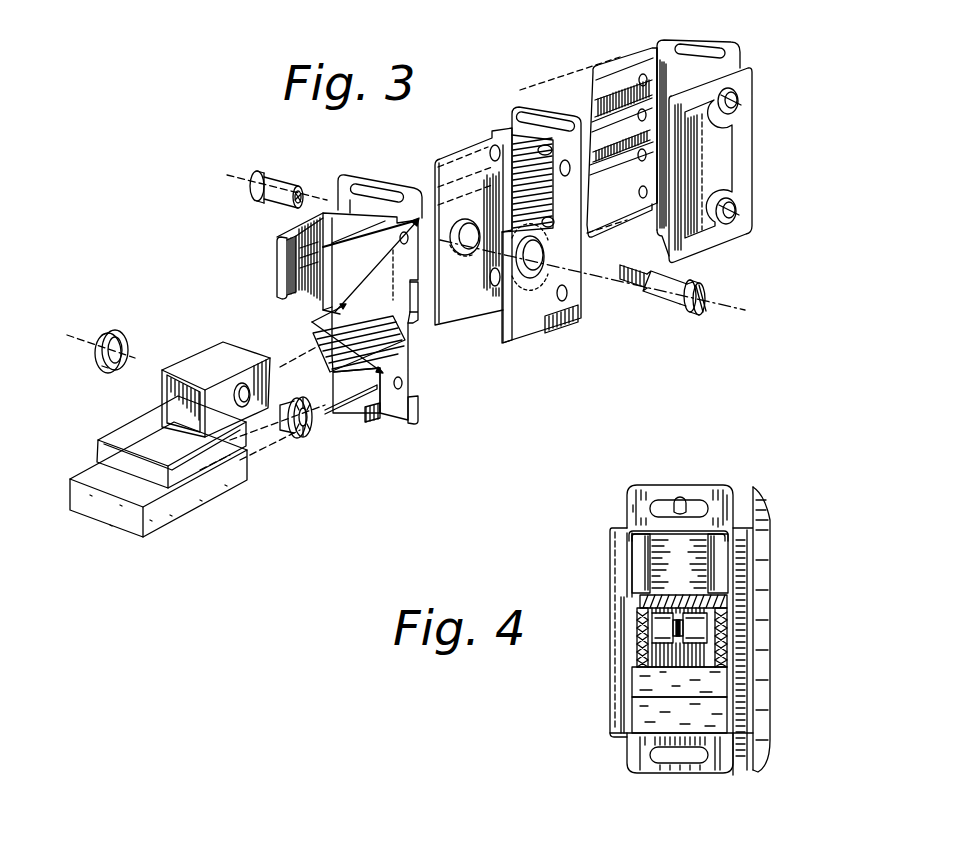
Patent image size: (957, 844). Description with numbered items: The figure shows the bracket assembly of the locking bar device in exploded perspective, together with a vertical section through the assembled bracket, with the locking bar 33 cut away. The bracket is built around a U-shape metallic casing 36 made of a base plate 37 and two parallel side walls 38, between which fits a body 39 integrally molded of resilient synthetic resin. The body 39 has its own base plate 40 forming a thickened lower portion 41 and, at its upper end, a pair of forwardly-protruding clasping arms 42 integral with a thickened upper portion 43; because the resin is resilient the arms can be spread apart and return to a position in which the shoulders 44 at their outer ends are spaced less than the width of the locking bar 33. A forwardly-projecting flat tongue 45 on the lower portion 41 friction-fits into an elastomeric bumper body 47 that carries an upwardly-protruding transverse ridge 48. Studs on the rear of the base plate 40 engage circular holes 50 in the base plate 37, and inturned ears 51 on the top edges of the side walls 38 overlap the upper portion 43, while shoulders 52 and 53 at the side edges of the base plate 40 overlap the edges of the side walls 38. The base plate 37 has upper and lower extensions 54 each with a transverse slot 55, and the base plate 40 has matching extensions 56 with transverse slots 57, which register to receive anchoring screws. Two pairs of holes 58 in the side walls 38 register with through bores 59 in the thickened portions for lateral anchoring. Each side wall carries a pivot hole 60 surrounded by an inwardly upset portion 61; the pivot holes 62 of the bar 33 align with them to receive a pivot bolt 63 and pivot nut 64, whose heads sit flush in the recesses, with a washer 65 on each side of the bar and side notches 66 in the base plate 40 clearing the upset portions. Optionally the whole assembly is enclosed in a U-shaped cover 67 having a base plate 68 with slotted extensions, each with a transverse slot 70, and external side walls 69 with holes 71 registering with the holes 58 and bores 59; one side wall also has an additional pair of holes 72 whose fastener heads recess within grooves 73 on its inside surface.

In FIG. 3, the locking bar 33 is at (232, 408).
In FIG. 4, the locking bar 33 is at (715, 665).
In FIG. 3, the U-shape metallic casing 36 is at (473, 217).
In FIG. 3, the base plate 37 is at (592, 212).
In FIG. 3, the side walls 38 is at (452, 173).
In FIG. 4, the side walls 38 is at (630, 700).
In FIG. 3, the body 39 is at (318, 182).
In FIG. 3, the base plate 40 is at (408, 398).
In FIG. 3, the thickened lower portion 41 is at (386, 404).
In FIG. 3, the clasping arms 42 is at (352, 257).
In FIG. 3, the thickened upper portion 43 is at (341, 293).
In FIG. 4, the shoulders 44 is at (640, 560).
In FIG. 3, the flat tongue 45 is at (330, 422).
In FIG. 3, the bumper body 47 is at (158, 466).
In FIG. 4, the bumper body 47 is at (648, 718).
In FIG. 3, the transverse ridge 48 is at (115, 440).
In FIG. 4, the transverse ridge 48 is at (645, 680).
In FIG. 3, the circular holes 50 is at (540, 238).
In FIG. 3, the inturned ears 51 is at (517, 104).
In FIG. 4, the inturned ears 51 is at (720, 530).
In FIG. 3, the shoulder 52 is at (413, 312).
In FIG. 3, the shoulder 53 is at (410, 422).
In FIG. 3, the extensions 54 is at (537, 118).
In FIG. 4, the extensions 54 is at (725, 487).
In FIG. 3, the transverse slot 55 is at (545, 145).
In FIG. 4, the transverse slot 55 is at (681, 500).
In FIG. 3, the extensions 56 is at (410, 186).
In FIG. 3, the transverse slot 57 is at (377, 192).
In FIG. 4, the transverse slot 57 is at (680, 505).
In FIG. 3, the holes 58 is at (566, 300).
In FIG. 3, the through bores 59 is at (349, 295).
In FIG. 3, the pivot hole 60 is at (470, 258).
In FIG. 3, the upset portion 61 is at (493, 286).
In FIG. 3, the pivot holes 62 is at (248, 402).
In FIG. 3, the pivot bolt 63 is at (680, 293).
In FIG. 4, the pivot bolt 63 is at (650, 632).
In FIG. 3, the pivot nut 64 is at (280, 184).
In FIG. 4, the pivot nut 64 is at (706, 633).
In FIG. 3, the washer 65 is at (112, 332).
In FIG. 3, the side notches 66 is at (385, 308).
In FIG. 3, the U-shaped cover 67 is at (730, 138).
In FIG. 3, the base plate 68 is at (736, 60).
In FIG. 3, the external side walls 69 is at (707, 238).
In FIG. 3, the transverse slot 70 is at (704, 48).
In FIG. 3, the holes 71 is at (644, 76).
In FIG. 3, the additional pair of holes 72 is at (665, 115).
In FIG. 3, the grooves 73 is at (693, 135).